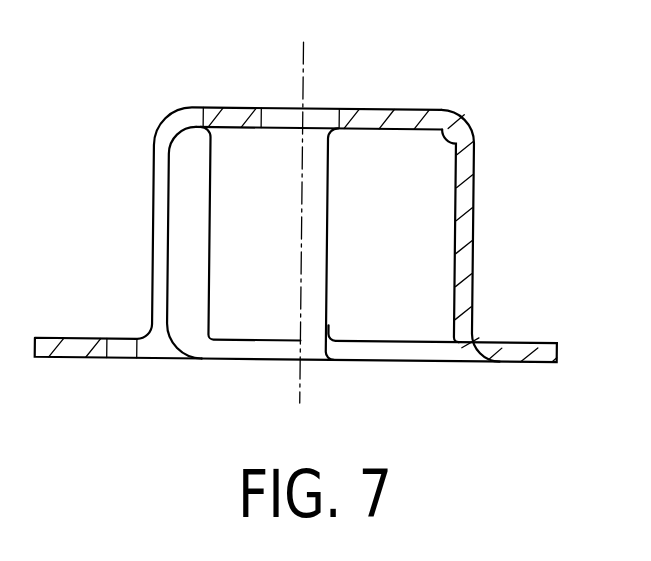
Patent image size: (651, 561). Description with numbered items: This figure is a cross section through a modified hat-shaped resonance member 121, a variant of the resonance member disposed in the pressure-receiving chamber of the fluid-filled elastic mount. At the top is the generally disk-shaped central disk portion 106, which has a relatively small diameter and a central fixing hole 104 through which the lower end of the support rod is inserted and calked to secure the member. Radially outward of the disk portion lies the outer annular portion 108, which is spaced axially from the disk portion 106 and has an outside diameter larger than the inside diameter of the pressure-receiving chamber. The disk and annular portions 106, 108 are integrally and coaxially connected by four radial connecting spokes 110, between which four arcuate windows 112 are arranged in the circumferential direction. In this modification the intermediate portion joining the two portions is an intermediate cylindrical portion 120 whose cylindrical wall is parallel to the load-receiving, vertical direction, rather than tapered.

The central fixing hole 104 is at (337, 115).
The central disk portion 106 is at (240, 100).
The annular portion 108 is at (529, 331).
The radial connecting spokes 110 is at (202, 250).
The arcuate windows 112 is at (162, 181).
The intermediate cylindrical portion 120 is at (491, 237).
The resonance member 121 is at (126, 100).